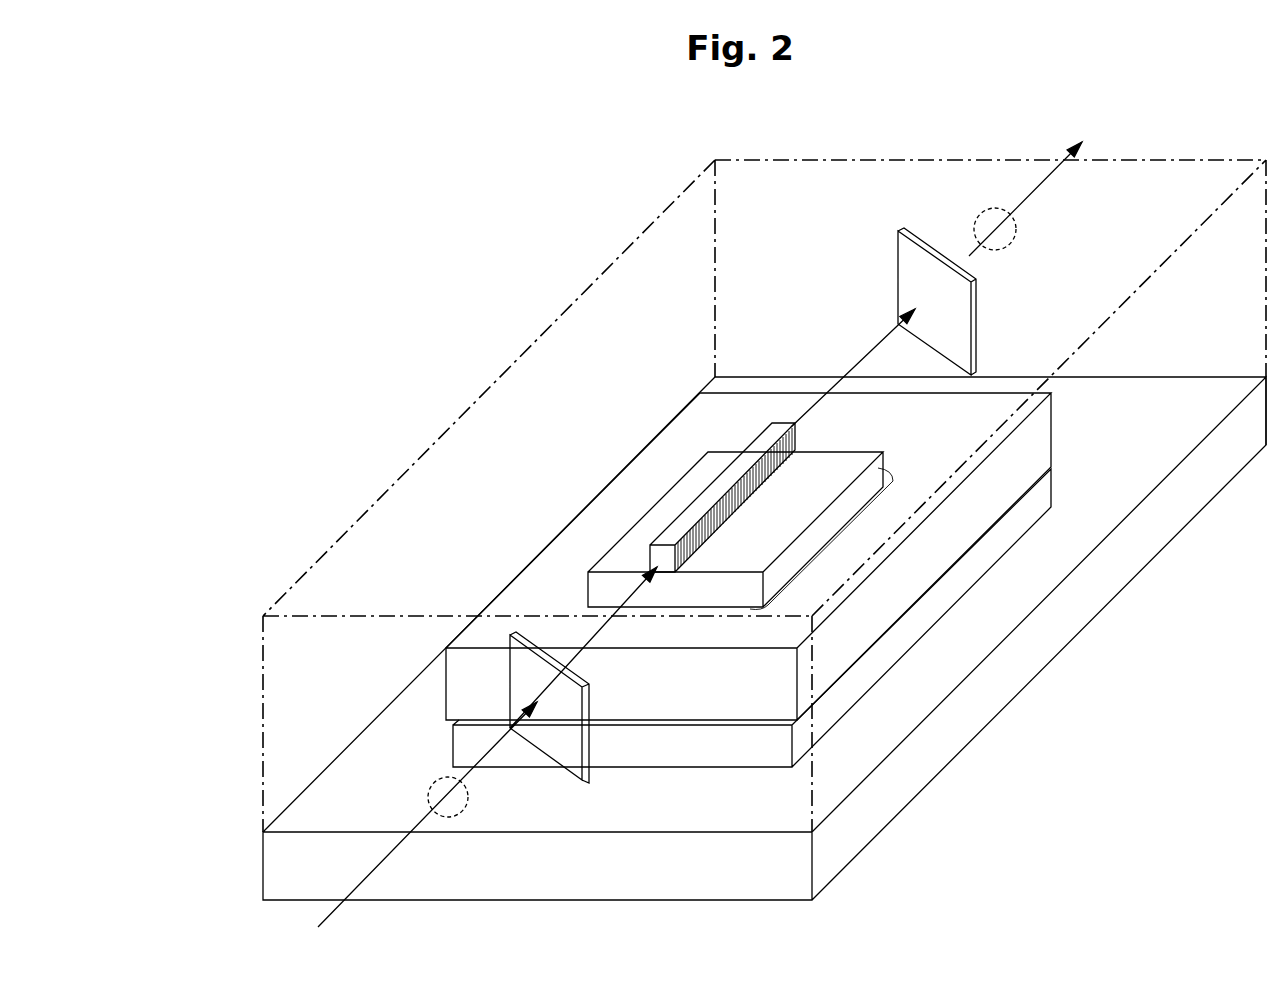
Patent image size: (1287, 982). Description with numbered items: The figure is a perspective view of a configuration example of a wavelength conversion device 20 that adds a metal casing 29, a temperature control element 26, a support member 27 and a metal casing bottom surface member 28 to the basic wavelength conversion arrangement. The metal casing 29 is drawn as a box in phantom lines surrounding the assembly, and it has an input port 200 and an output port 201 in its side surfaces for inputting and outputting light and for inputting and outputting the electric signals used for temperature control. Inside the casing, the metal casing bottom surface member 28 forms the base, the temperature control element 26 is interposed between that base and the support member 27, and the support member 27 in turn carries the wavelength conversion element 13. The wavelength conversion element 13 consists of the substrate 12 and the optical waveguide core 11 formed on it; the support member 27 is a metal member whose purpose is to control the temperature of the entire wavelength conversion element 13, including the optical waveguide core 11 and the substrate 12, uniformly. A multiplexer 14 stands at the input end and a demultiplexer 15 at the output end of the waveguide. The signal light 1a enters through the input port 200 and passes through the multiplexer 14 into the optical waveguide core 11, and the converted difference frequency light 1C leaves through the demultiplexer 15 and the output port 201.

The signal light 1a is at (320, 928).
The difference frequency light 1C is at (936, 260).
The optical waveguide core 11 is at (758, 441).
The substrate 12 is at (690, 487).
The wavelength conversion element 13 is at (838, 546).
The multiplexer 14 is at (593, 745).
The demultiplexer 15 is at (898, 231).
The wavelength conversion device 20 is at (1184, 704).
The temperature control element 26 is at (462, 746).
The support member 27 is at (547, 552).
The metal casing bottom surface member 28 is at (278, 872).
The metal casing 29 is at (626, 230).
The input port 200 is at (470, 805).
The output port 201 is at (1015, 237).